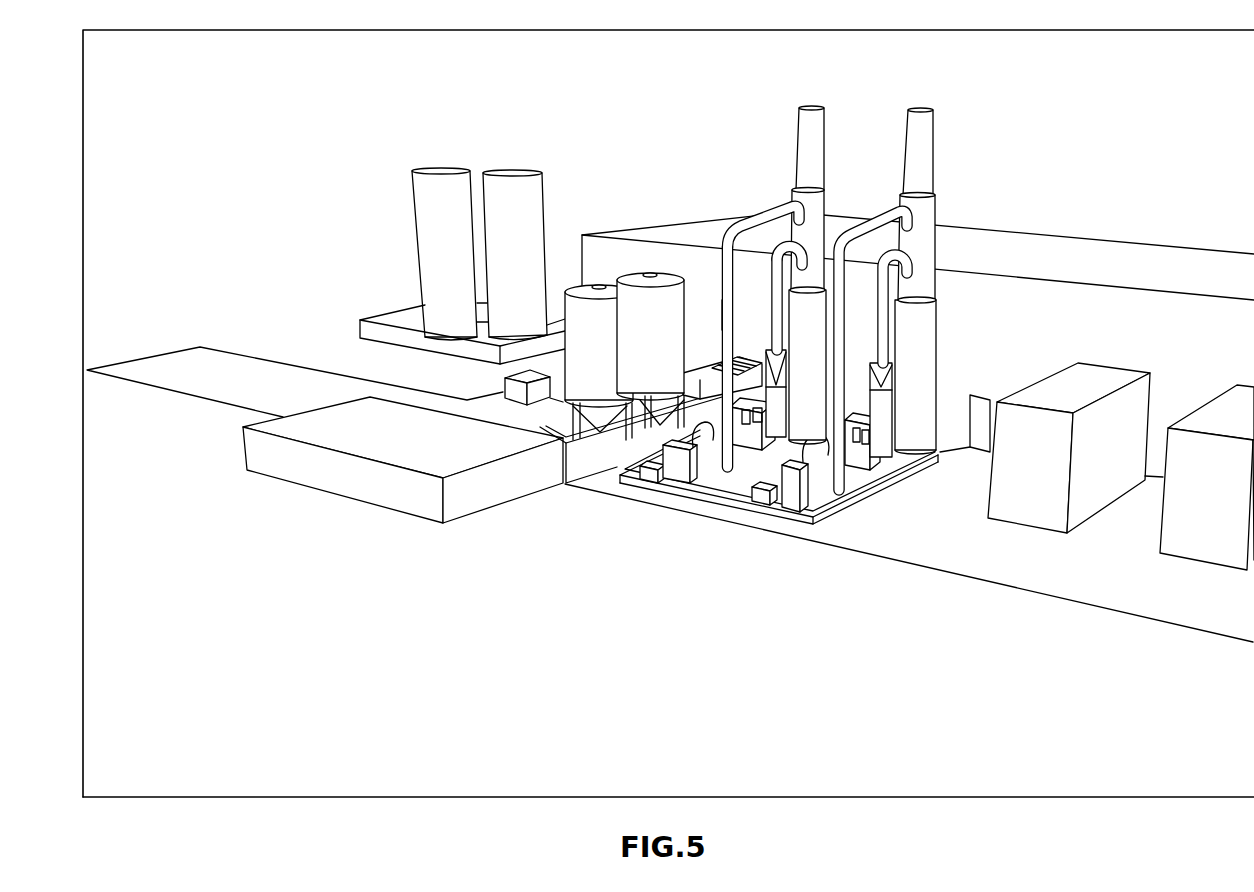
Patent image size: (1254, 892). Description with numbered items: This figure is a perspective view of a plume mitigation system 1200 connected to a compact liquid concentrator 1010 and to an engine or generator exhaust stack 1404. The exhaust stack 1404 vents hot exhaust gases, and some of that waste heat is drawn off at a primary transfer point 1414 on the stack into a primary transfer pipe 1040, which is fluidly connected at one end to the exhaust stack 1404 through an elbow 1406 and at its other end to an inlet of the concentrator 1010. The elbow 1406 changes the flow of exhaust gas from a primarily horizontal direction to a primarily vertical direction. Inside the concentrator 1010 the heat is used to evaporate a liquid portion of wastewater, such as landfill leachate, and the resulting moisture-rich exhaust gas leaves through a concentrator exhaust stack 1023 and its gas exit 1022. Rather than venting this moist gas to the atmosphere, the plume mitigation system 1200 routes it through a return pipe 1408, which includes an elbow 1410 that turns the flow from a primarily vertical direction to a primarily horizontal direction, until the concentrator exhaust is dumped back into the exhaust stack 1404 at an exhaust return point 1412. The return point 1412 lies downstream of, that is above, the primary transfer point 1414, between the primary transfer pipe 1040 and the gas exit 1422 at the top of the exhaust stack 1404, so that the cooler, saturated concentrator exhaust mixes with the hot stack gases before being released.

The plume mitigation system 1200 is at (655, 145).
The concentrator 1010 is at (747, 440).
The gas exit 1022 is at (725, 313).
The concentrator exhaust stack 1023 is at (725, 390).
The primary transfer pipe 1040 is at (773, 307).
The exhaust stack 1404 is at (826, 122).
The elbow 1406 is at (783, 240).
The return pipe 1408 is at (750, 228).
The elbow 1410 is at (733, 223).
The exhaust return point 1412 is at (790, 207).
The primary transfer point 1414 is at (807, 260).
The gas exit 1422 is at (810, 106).